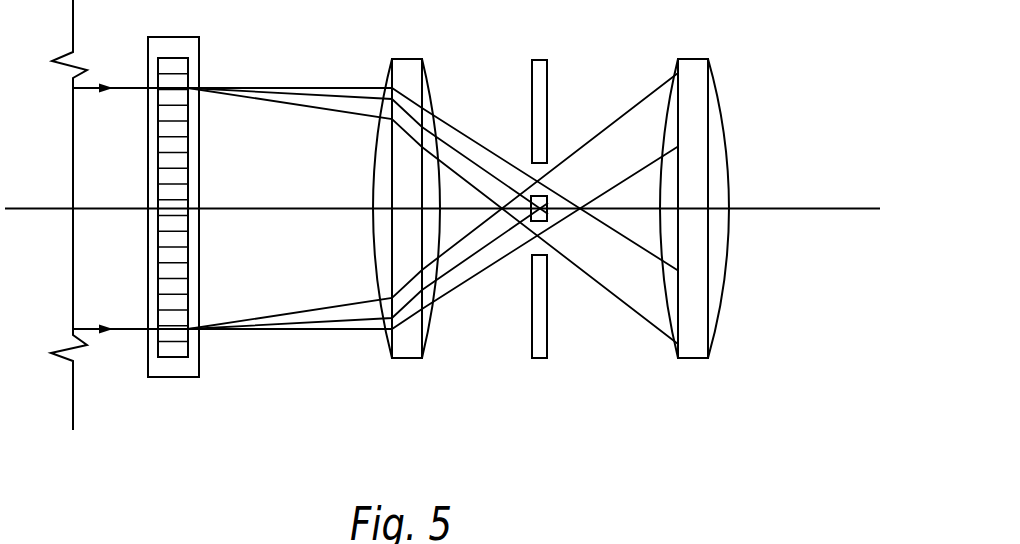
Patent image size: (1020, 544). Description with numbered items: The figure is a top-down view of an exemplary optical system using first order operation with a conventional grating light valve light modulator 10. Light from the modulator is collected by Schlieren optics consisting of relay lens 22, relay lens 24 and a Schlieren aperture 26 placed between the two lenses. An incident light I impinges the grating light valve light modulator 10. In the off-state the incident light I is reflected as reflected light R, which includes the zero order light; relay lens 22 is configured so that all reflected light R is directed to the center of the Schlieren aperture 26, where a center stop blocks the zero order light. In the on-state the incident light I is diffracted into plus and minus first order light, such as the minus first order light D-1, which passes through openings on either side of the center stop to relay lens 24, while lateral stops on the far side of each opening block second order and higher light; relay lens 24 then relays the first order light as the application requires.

The grating light valve light modulator 10 is at (171, 377).
The relay lens 22 is at (402, 359).
The relay lens 24 is at (685, 359).
The Schlieren aperture 26 is at (539, 372).
The incident light I is at (130, 195).
The reflected light R is at (335, 97).
The minus first order light D-1 is at (278, 382).